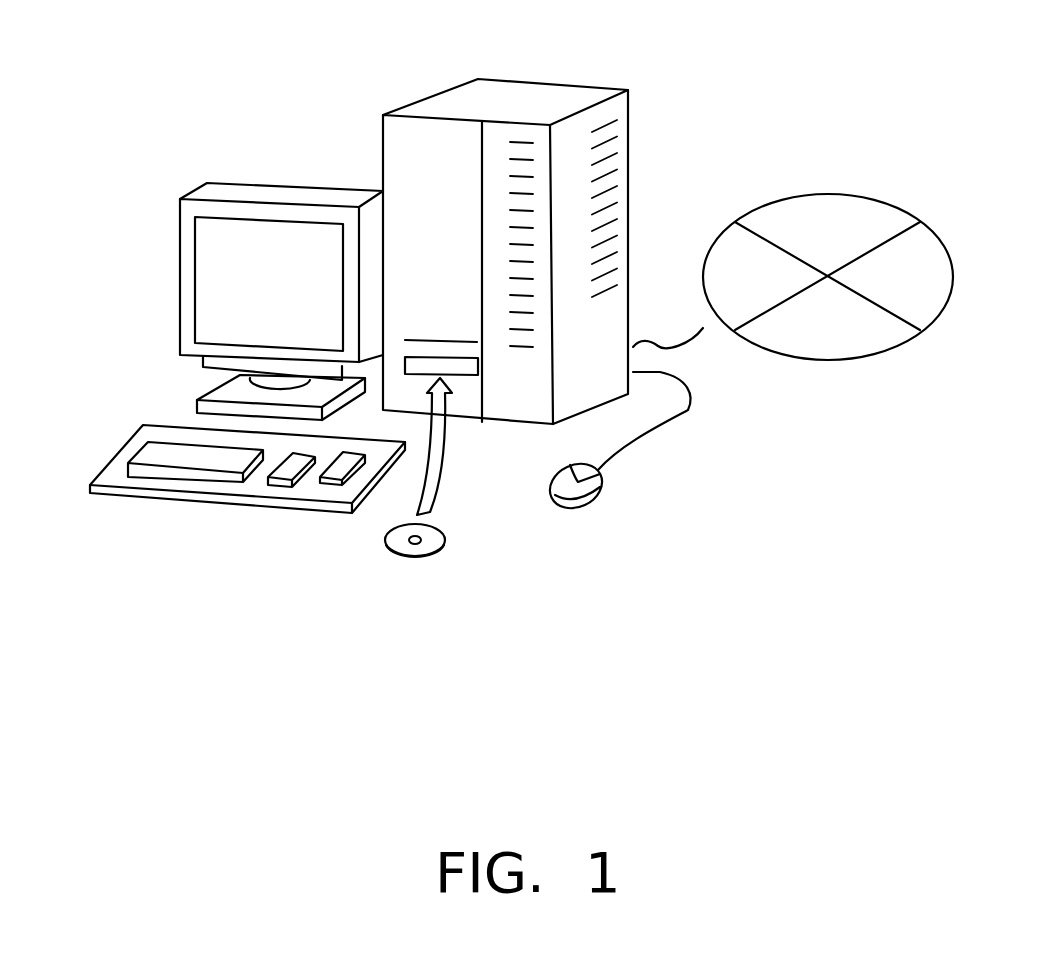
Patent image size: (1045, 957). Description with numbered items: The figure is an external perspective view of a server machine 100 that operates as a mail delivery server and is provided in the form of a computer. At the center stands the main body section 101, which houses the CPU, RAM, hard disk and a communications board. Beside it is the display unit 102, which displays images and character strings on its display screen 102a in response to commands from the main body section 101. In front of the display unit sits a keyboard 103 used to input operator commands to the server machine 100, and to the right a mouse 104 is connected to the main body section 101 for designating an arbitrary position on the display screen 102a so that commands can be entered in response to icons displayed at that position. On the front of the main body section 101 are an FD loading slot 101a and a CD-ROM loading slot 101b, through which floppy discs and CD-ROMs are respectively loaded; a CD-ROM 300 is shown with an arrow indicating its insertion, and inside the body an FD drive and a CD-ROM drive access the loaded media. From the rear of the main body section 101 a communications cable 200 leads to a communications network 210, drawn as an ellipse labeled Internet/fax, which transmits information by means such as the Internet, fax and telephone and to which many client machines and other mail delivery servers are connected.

The server machine 100 is at (258, 122).
The main body section 101 is at (578, 97).
The FD loading slot 101a is at (437, 340).
The CD-ROM loading slot 101b is at (482, 362).
The display unit 102 is at (180, 313).
The display screen 102a is at (207, 247).
The keyboard 103 is at (117, 448).
The mouse 104 is at (555, 508).
The communications cable 200 is at (672, 345).
The communications network 210 is at (826, 360).
The CD-ROM 300 is at (413, 563).